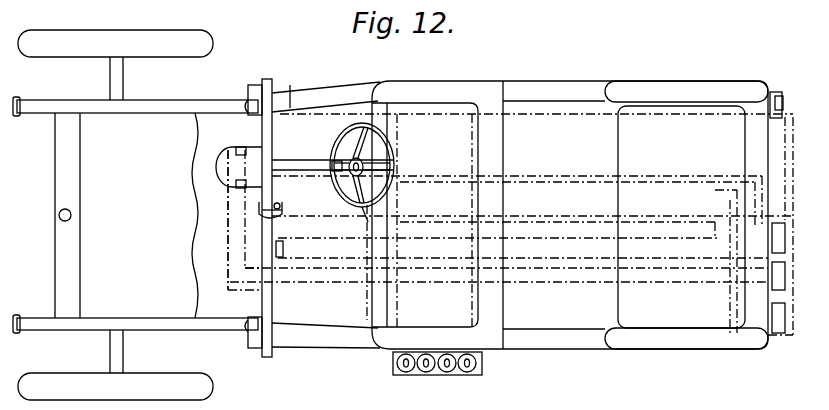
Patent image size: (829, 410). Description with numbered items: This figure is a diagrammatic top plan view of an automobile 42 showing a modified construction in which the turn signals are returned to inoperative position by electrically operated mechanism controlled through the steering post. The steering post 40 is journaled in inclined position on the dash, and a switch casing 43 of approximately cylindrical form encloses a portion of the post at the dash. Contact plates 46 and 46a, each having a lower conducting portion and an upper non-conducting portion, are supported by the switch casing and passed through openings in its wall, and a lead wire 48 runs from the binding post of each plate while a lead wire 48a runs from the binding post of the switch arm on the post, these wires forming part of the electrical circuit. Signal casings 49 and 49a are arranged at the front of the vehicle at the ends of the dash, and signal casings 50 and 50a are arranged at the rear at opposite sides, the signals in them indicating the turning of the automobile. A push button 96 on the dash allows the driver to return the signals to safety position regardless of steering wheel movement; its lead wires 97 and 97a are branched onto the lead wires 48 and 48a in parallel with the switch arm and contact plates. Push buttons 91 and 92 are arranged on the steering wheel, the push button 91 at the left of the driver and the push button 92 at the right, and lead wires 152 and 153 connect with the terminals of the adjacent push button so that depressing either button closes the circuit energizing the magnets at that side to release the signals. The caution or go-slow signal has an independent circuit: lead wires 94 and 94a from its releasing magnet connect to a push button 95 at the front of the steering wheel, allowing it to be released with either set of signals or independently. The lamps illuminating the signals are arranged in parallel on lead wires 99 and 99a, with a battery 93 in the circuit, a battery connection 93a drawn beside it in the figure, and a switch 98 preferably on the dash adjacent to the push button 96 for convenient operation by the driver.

The steering post 40 is at (290, 170).
The automobile 42 is at (528, 128).
The switch casing 43 is at (249, 152).
The contact plate 46 is at (236, 186).
The contact plate 46a is at (238, 149).
The lead wire 48 is at (227, 243).
The lead wire 48a is at (246, 272).
The signal casing 49 is at (258, 349).
The signal casing 49a is at (257, 86).
The signal casing 50 is at (772, 305).
The signal casing 50a is at (772, 118).
The push button 91 is at (353, 218).
The push button 92 is at (362, 165).
The battery 93 is at (422, 376).
The engine mount 93a is at (474, 309).
The lead wire 94 is at (650, 175).
The lead wire 94a is at (668, 183).
The push button 95 is at (338, 161).
The push button 96 is at (279, 208).
The lead wire 97 is at (272, 204).
The lead wire 97a is at (283, 212).
The switch 98 is at (284, 249).
The lead wire 99 is at (598, 237).
The lead wire 99a is at (575, 259).
The lead wire 152 is at (302, 300).
The lead wire 153 is at (372, 304).